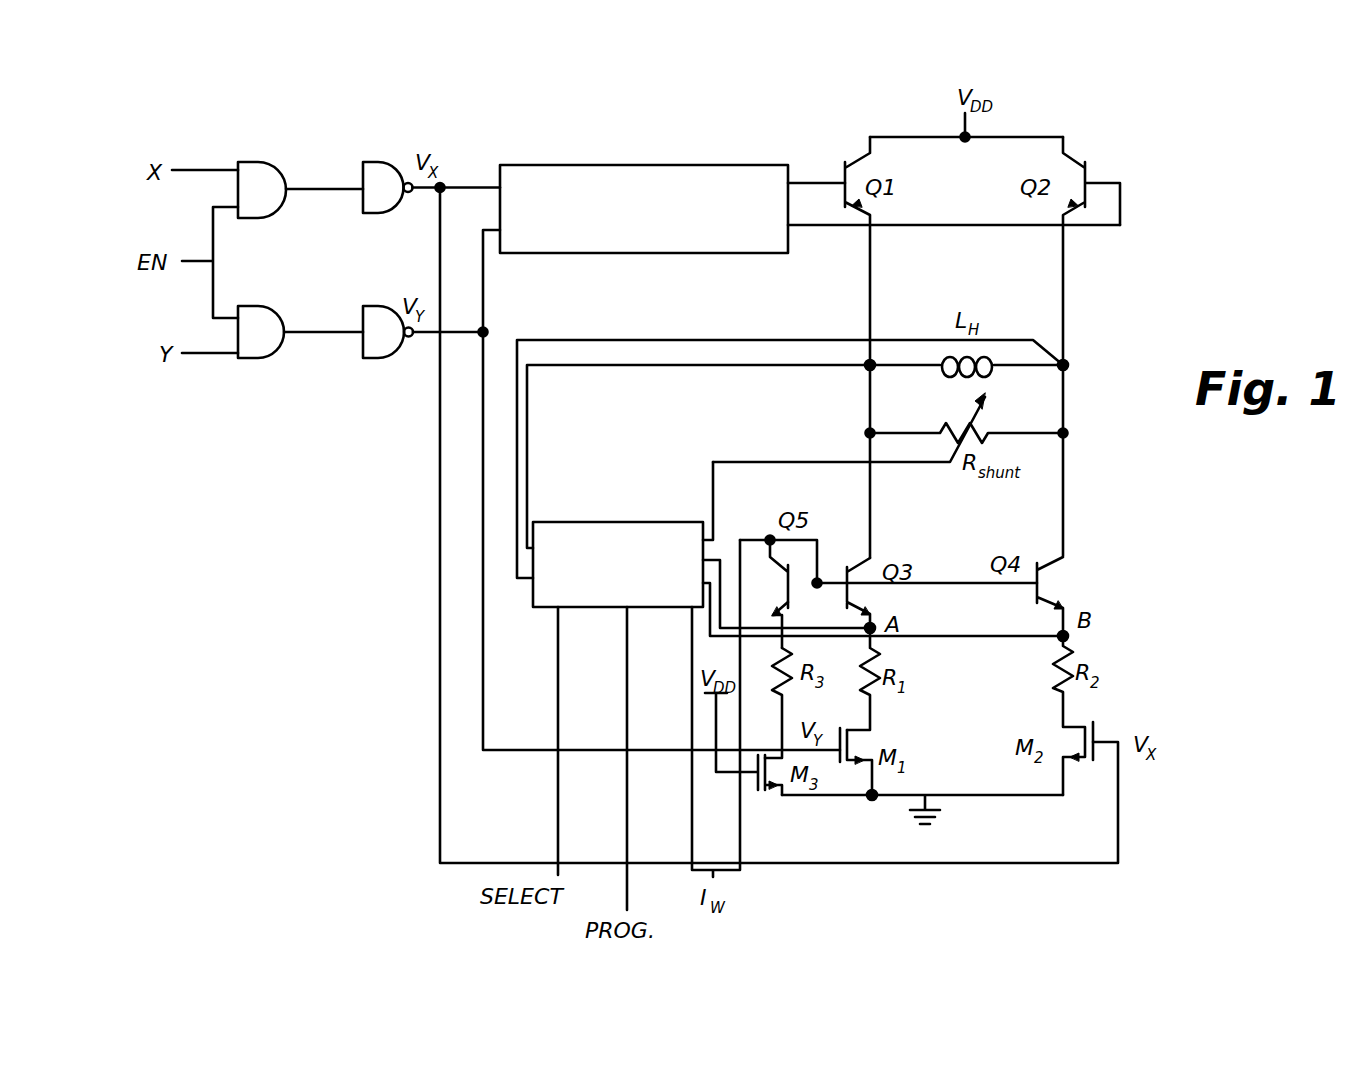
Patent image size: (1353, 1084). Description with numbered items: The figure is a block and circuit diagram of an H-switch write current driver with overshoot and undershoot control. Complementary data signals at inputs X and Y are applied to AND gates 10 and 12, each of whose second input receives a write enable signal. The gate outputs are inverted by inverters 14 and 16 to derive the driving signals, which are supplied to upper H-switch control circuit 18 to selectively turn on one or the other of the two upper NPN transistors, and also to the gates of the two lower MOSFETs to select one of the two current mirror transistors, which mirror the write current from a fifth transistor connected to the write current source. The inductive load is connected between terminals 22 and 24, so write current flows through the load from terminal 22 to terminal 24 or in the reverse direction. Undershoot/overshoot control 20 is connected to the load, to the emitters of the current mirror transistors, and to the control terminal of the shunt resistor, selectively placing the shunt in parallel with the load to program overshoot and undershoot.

The AND gate 10 is at (253, 163).
The AND gate 12 is at (258, 360).
The inverter 14 is at (384, 161).
The inverter 16 is at (385, 360).
The upper H-switch control circuit 18 is at (586, 165).
The undershoot/overshoot control 20 is at (567, 522).
The terminal 22 is at (864, 370).
The terminal 24 is at (1067, 362).